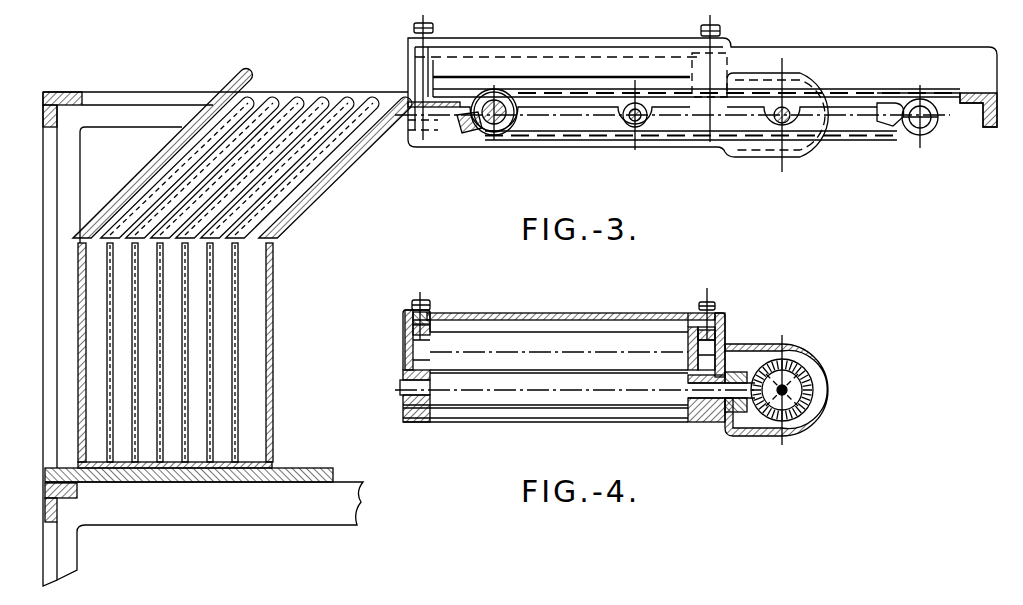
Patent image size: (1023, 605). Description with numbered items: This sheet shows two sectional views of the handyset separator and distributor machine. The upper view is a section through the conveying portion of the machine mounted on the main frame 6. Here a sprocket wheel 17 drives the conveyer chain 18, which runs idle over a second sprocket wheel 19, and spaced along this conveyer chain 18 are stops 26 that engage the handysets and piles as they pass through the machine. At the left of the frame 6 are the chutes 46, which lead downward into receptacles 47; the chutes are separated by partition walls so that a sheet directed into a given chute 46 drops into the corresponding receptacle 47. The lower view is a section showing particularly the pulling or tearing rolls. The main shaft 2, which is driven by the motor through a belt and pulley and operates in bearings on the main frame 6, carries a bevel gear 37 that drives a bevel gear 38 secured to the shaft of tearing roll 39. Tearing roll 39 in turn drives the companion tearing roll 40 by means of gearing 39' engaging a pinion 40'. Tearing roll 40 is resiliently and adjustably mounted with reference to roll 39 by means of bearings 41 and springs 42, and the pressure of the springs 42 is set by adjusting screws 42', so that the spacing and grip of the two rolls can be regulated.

In FIG. 3, the main shaft 2 is at (787, 110).
In FIG. 4, the main shaft 2 is at (805, 360).
In FIG. 3, the main frame 6 is at (913, 41).
In FIG. 3, the sprocket wheel 17 is at (508, 123).
In FIG. 3, the conveyer chain 18 is at (850, 135).
In FIG. 3, the sprocket wheel 19 is at (880, 108).
In FIG. 3, the stops 26 is at (468, 118).
In FIG. 4, the bevel gear 37 is at (815, 383).
In FIG. 4, the bevel gear 38 is at (747, 372).
In FIG. 4, the tearing roll 39 is at (575, 399).
In FIG. 4, the gearing 39' is at (719, 416).
In FIG. 4, the tearing roll 40 is at (571, 343).
In FIG. 4, the pinion 40' is at (694, 290).
In FIG. 4, the bearings 41 is at (410, 347).
In FIG. 4, the springs 42 is at (583, 313).
In FIG. 4, the adjusting screws 42' is at (561, 314).
In FIG. 3, the chutes 46 is at (355, 112).
In FIG. 3, the receptacles 47 is at (175, 352).